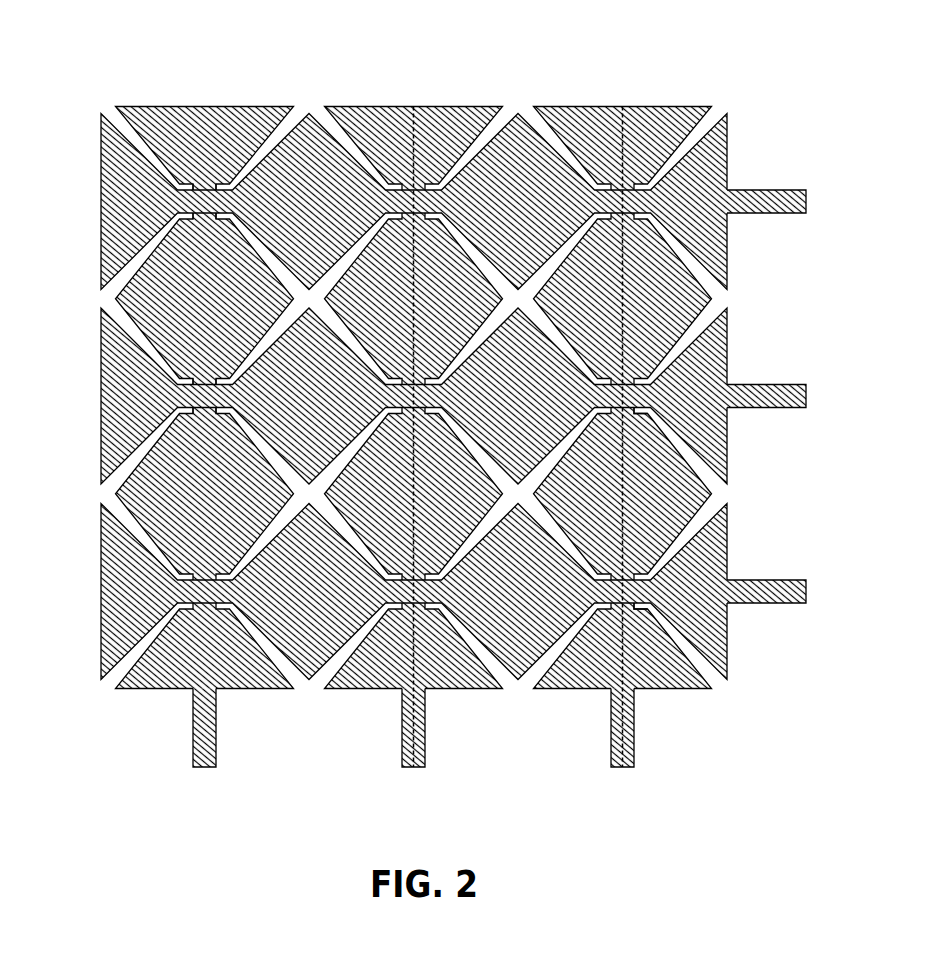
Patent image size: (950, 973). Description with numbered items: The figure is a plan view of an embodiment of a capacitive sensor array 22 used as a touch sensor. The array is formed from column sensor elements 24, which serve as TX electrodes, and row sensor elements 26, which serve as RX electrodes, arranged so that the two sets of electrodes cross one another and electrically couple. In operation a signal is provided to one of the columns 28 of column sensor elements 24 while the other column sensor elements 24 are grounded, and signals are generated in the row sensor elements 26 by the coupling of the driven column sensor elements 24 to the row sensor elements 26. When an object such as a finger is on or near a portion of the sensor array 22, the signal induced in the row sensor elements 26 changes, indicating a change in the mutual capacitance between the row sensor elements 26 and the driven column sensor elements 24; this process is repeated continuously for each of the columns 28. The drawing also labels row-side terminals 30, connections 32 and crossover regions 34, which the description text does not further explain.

The capacitive sensor array 22 is at (452, 419).
The column sensor elements 24 is at (128, 78).
The row sensor elements 26 is at (112, 236).
The columns 28 is at (215, 778).
The row electrode terminals 30 is at (815, 192).
The electrode bridge connections 32 is at (207, 187).
The insulating crossover regions 34 is at (643, 412).